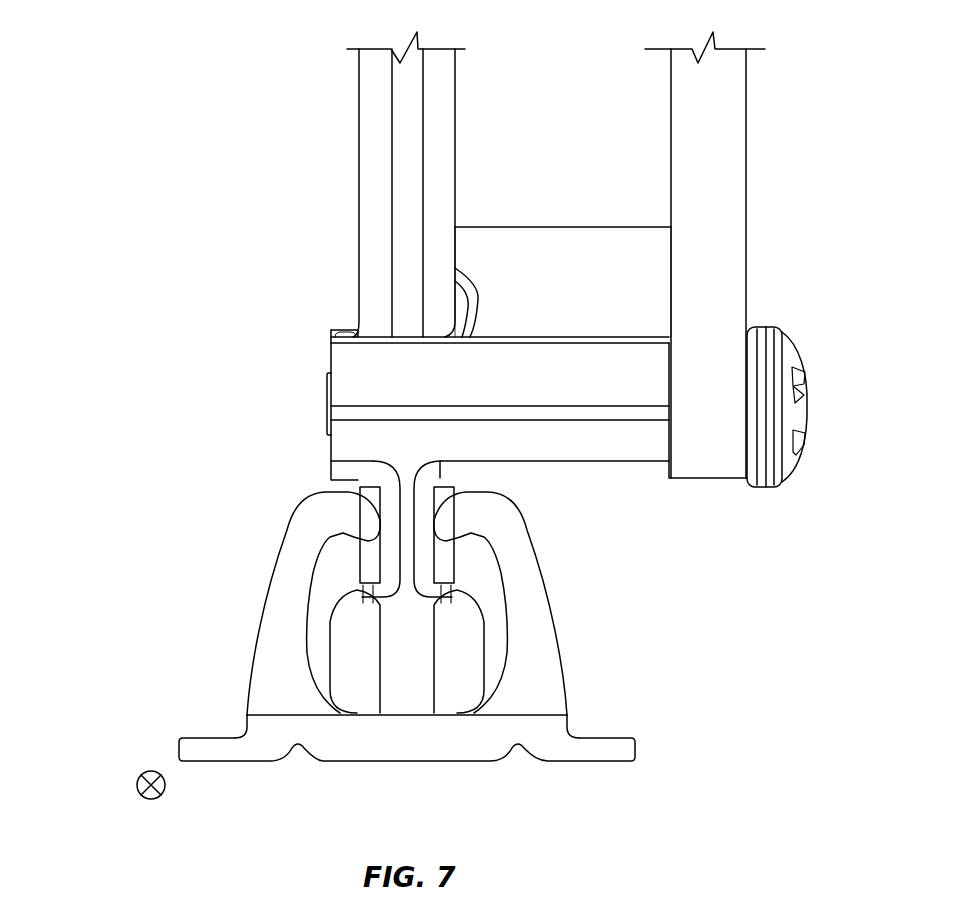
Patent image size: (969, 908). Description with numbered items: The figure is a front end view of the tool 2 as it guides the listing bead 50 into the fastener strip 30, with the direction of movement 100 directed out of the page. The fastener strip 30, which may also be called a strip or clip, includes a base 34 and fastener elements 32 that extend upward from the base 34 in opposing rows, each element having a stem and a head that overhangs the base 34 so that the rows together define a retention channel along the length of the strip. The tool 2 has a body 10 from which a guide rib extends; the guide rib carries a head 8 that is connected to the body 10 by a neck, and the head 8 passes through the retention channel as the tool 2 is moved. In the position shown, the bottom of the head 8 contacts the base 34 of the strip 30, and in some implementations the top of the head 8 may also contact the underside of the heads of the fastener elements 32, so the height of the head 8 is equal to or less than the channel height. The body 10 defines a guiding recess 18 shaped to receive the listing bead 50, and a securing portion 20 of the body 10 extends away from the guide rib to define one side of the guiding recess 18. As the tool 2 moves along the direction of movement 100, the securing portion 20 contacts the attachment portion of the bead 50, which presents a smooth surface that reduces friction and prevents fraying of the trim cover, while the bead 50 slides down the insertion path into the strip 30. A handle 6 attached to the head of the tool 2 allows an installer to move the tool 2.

The tool 2 is at (649, 491).
The handle 6 is at (727, 185).
The head 8 is at (460, 686).
The body 10 is at (352, 367).
The guiding recess 18 is at (455, 293).
The securing portion 20 is at (562, 243).
The fastener strip 30 is at (386, 609).
The fastener elements 32 is at (280, 593).
The base 34 is at (470, 748).
The listing bead 50 is at (407, 162).
The direction of movement 100 is at (137, 783).